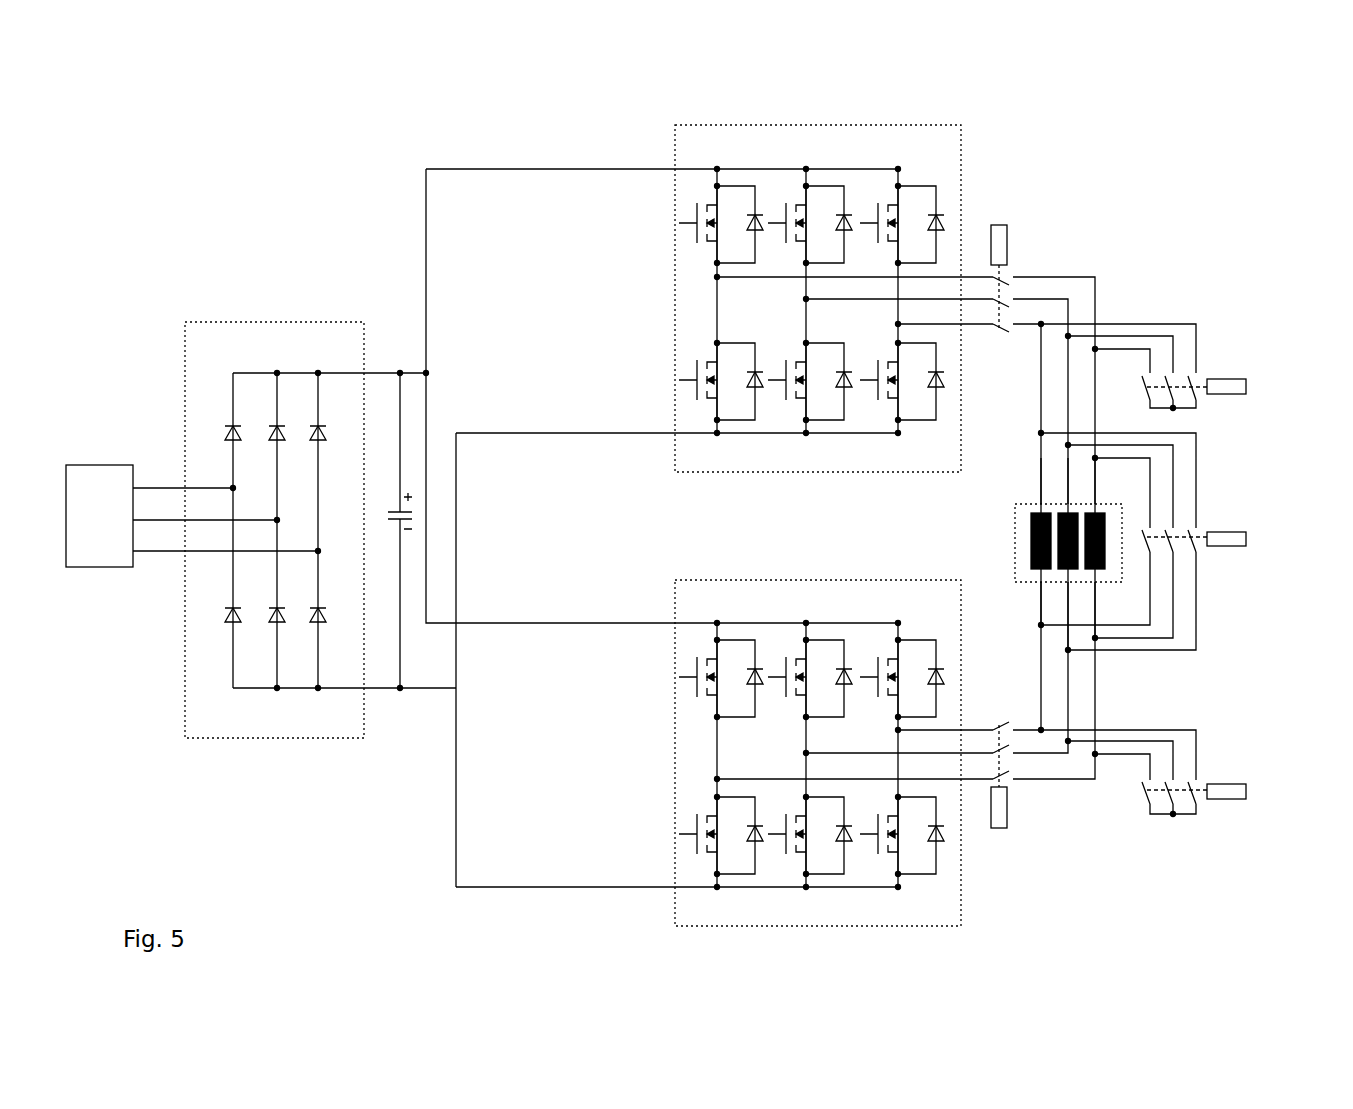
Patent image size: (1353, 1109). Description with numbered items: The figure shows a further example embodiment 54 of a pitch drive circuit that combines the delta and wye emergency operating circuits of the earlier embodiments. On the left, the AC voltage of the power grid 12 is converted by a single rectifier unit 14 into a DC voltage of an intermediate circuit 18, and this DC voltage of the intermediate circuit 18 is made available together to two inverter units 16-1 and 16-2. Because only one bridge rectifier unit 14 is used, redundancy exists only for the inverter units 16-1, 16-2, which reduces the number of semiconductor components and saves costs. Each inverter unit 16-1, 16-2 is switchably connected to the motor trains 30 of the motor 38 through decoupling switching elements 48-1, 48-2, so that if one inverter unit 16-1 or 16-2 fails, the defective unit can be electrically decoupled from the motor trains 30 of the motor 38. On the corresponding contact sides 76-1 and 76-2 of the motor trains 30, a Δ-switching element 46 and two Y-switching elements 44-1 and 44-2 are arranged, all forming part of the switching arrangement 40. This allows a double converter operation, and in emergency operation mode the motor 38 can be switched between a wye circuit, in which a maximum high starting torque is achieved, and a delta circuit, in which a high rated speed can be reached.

The power grid 12 is at (101, 568).
The rectifier unit 14 is at (308, 739).
The intermediate circuit 18 is at (537, 305).
The inverter unit 16-1 is at (961, 915).
The inverter unit 16-2 is at (961, 145).
The motor trains 30 is at (1031, 548).
The motor 38 is at (1041, 556).
The switching unit 40 is at (1159, 529).
The first star-point contactor 44-1 is at (1226, 394).
The second star-point contactor 44-2 is at (1226, 799).
The Δ-switching element 46 is at (1226, 546).
The decoupling switching element 48-1 is at (1000, 829).
The decoupling switching element 48-2 is at (1000, 224).
The example embodiment 54 is at (1175, 198).
The contact side 76-1 is at (1040, 583).
The contact side 76-2 is at (1040, 504).